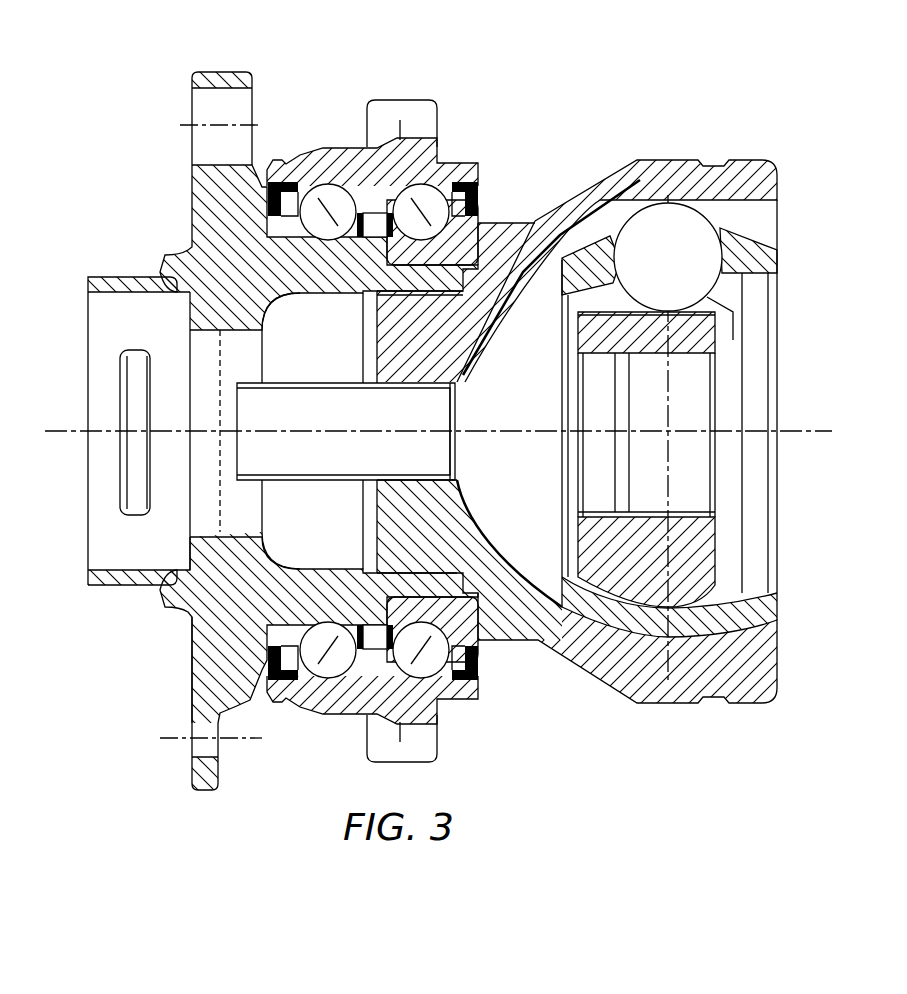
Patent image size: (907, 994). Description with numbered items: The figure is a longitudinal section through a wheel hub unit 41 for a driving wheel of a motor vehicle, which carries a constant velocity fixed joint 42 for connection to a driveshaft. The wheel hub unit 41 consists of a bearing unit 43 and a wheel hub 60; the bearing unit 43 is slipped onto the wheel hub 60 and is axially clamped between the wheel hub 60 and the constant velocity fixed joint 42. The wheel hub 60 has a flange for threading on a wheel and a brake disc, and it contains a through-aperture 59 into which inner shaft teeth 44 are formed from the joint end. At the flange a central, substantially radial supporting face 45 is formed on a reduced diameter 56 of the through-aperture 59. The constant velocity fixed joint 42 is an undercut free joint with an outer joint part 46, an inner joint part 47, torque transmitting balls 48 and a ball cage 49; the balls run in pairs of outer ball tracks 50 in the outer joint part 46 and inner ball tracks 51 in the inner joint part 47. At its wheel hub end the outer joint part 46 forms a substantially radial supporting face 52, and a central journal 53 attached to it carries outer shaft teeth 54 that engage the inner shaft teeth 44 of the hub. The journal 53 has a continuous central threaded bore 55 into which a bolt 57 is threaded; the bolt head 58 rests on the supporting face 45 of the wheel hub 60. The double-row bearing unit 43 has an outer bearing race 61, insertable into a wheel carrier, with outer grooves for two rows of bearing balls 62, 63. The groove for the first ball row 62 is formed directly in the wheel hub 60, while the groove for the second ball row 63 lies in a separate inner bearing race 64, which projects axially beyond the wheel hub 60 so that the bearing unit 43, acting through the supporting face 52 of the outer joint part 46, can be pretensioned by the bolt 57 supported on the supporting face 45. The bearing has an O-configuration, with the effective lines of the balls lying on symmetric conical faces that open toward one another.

The wheel hub unit 41 is at (291, 105).
The constant velocity fixed joint 42 is at (453, 497).
The bearing unit 43 is at (471, 100).
The inner shaft teeth 44 is at (363, 308).
The radial supporting face 45 is at (162, 273).
The outer joint part 46 is at (733, 177).
The inner joint part 47 is at (717, 340).
The torque transmitting balls 48 is at (765, 186).
The ball cage 49 is at (752, 248).
The outer ball tracks 50 is at (609, 230).
The inner ball tracks 51 is at (598, 292).
The radial supporting face 52 is at (476, 252).
The central journal 53 is at (448, 333).
The outer shaft teeth 54 is at (480, 312).
The central threaded bore 55 is at (458, 386).
The reduced diameter 56 is at (230, 322).
The bolt 57 is at (258, 462).
The bolt head 58 is at (172, 506).
The through-aperture 59 is at (323, 300).
The wheel hub 60 is at (204, 199).
The outer bearing race 61 is at (351, 150).
The bearing balls 62 is at (329, 205).
The bearing balls 63 is at (432, 198).
The inner bearing race 64 is at (461, 232).